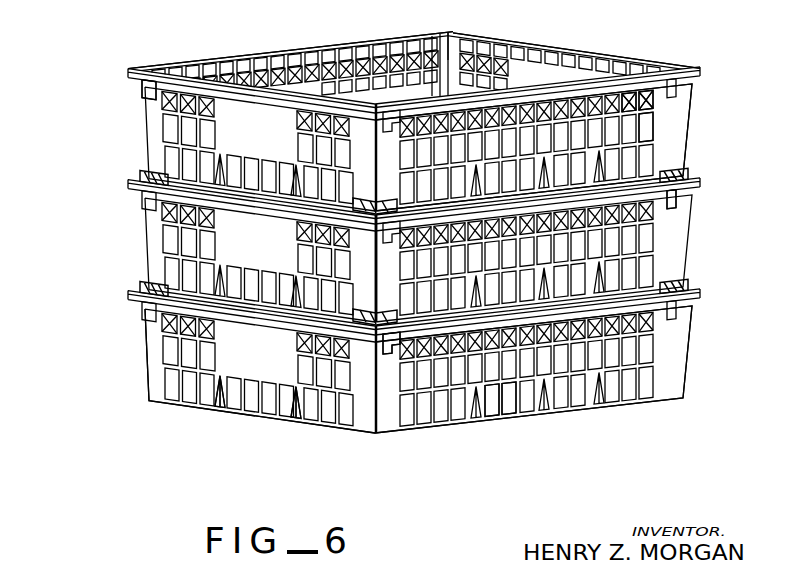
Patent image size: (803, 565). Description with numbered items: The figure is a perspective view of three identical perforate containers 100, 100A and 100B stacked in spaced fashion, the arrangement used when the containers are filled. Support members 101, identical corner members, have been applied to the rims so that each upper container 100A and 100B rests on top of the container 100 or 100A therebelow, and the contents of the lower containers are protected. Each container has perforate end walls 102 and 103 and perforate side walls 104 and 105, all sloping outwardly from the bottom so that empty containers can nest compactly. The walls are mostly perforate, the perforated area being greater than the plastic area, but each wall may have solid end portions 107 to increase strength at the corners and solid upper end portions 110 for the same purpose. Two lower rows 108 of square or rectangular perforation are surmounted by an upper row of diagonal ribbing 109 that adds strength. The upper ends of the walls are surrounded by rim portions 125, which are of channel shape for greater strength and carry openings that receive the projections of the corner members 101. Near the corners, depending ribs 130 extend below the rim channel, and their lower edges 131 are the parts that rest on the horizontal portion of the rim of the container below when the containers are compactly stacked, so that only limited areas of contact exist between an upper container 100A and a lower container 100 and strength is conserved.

The container 100 is at (128, 366).
The container 100A is at (134, 252).
The container 100B is at (128, 143).
The support member 101 is at (688, 175).
The end wall 102 is at (257, 415).
The end wall 103 is at (559, 61).
The side wall 104 is at (502, 417).
The side wall 105 is at (308, 62).
The solid end portion 107 is at (368, 152).
The lower row of perforation 108 is at (645, 156).
The upper row of diagonal ribbing 109 is at (641, 99).
The solid upper end portion 110 is at (274, 145).
The rim portion 125 is at (465, 38).
The depending rib 130 is at (142, 97).
The lower edge of rib 131 is at (374, 247).